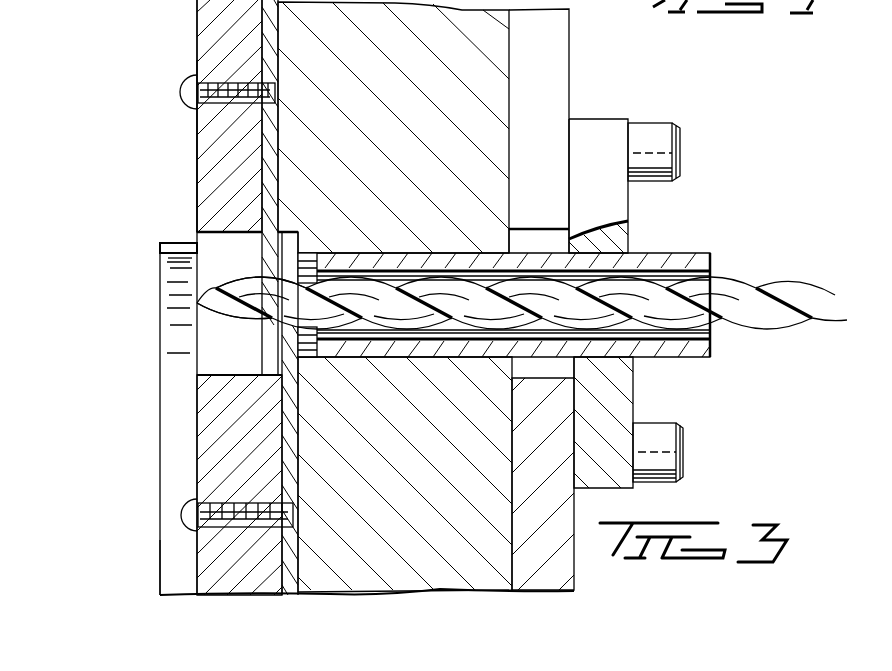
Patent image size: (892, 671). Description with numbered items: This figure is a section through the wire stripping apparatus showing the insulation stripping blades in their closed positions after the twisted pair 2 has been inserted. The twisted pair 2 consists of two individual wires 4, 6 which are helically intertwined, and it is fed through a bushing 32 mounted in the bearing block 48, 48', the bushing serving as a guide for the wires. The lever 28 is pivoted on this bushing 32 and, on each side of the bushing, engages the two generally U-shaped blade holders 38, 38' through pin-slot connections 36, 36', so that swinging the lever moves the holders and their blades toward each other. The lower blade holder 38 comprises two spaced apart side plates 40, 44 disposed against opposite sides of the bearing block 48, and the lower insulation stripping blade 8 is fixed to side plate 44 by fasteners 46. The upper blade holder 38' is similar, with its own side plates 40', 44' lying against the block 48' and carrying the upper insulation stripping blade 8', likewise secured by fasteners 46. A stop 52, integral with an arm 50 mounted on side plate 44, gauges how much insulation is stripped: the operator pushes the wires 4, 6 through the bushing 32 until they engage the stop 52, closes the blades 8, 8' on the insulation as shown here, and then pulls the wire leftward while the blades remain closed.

The twisted pair 2 is at (208, 305).
The wire 4 is at (247, 317).
The wire 6 is at (242, 288).
The lower insulation stripping blade 8 is at (308, 413).
The upper insulation stripping blade 8' is at (312, 187).
The lever 28 is at (617, 203).
The bushing 32 is at (652, 263).
The pin-slot connection 36 is at (679, 452).
The pin-slot connection 36' is at (683, 152).
The lower blade holder 38 is at (95, 567).
The upper blade holder 38' is at (122, 127).
The side plate 40 is at (572, 477).
The side plate 40' is at (539, 131).
The side plate 44 is at (182, 485).
The side plate 44' is at (198, 116).
The fasteners 46 is at (193, 95).
The bearing block 48 is at (405, 485).
The bearing block 48' is at (411, 127).
The arm 50 is at (172, 392).
The stop 52 is at (173, 260).